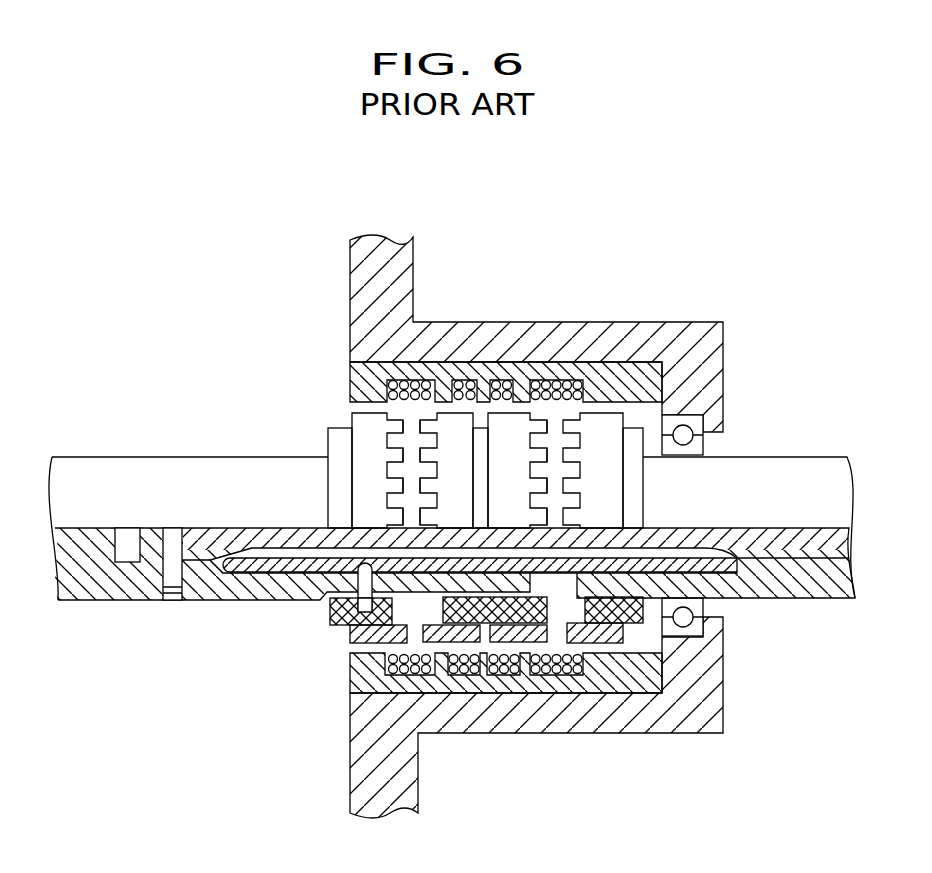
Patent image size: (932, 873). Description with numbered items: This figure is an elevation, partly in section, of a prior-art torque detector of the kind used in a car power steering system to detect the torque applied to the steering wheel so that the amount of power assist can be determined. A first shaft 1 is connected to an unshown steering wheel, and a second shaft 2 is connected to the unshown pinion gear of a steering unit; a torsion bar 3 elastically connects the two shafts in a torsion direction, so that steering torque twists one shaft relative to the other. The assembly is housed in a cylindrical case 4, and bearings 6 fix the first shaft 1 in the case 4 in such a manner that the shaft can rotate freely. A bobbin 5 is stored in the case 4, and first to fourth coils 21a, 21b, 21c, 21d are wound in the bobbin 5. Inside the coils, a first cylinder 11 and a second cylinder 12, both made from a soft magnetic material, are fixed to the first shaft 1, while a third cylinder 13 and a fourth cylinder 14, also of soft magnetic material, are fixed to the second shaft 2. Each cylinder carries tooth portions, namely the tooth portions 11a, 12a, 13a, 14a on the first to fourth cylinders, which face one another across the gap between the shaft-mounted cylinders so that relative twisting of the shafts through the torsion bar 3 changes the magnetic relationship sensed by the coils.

The first shaft 1 is at (845, 450).
The second shaft 2 is at (100, 472).
The torsion bar 3 is at (737, 558).
The cylindrical case 4 is at (607, 335).
The bobbin 5 is at (633, 365).
The bearings 6 is at (703, 420).
The first cylinder 11 is at (373, 432).
The tooth portion 11a is at (388, 482).
The second cylinder 12 is at (665, 412).
The tooth portion 12a is at (603, 450).
The third cylinder 13 is at (448, 502).
The tooth portion 13a is at (432, 516).
The fourth cylinder 14 is at (505, 507).
The tooth portion 14a is at (538, 517).
The first coil 21a is at (402, 378).
The second coil 21b is at (549, 380).
The third coil 21c is at (463, 382).
The fourth coil 21d is at (503, 380).